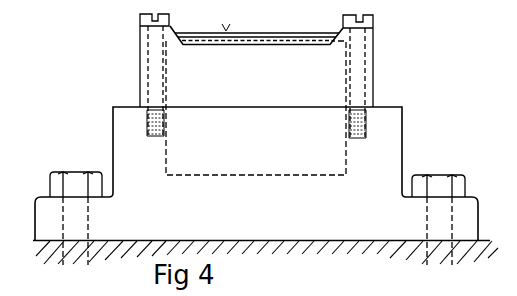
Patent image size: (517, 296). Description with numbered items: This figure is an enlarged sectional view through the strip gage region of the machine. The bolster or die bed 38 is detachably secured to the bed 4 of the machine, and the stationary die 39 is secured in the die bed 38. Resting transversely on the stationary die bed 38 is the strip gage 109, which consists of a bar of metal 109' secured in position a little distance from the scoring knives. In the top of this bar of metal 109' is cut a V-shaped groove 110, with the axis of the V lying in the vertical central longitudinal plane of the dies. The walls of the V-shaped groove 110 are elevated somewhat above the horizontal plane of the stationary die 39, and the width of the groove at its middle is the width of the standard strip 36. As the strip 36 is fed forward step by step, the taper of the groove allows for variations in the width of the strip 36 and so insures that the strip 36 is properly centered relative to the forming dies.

The bed 4 is at (478, 243).
The bolster or die bed 38 is at (388, 165).
The stationary die 39 is at (328, 155).
The strip 36 is at (316, 22).
The strip gage 109 is at (369, 76).
The bar of metal 109' is at (257, 29).
The V-shaped groove 110 is at (228, 33).